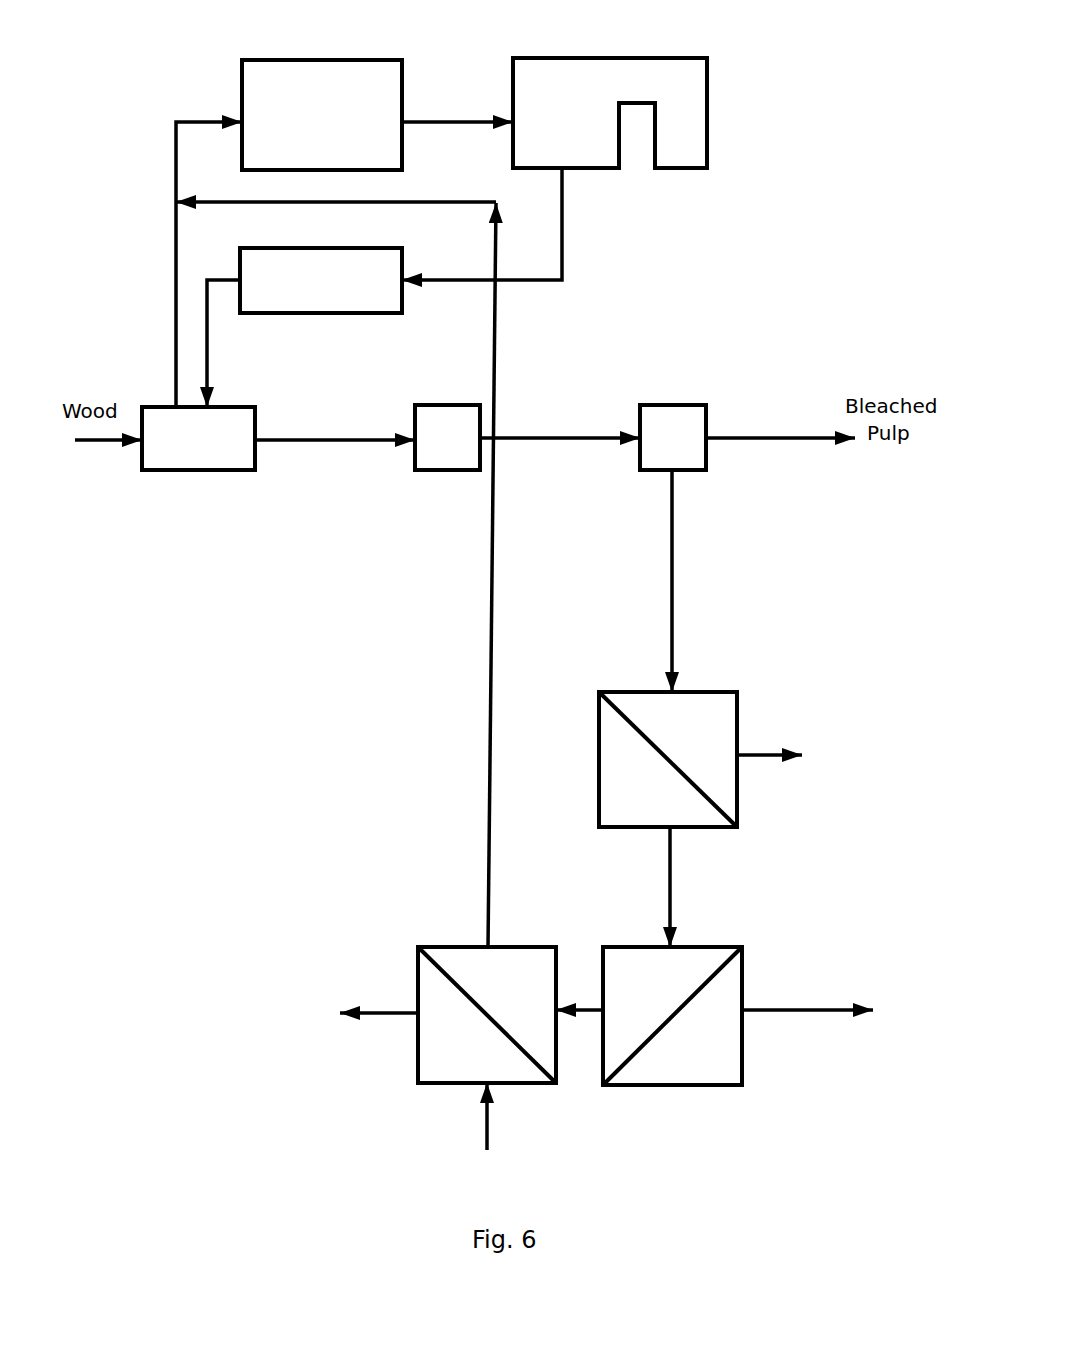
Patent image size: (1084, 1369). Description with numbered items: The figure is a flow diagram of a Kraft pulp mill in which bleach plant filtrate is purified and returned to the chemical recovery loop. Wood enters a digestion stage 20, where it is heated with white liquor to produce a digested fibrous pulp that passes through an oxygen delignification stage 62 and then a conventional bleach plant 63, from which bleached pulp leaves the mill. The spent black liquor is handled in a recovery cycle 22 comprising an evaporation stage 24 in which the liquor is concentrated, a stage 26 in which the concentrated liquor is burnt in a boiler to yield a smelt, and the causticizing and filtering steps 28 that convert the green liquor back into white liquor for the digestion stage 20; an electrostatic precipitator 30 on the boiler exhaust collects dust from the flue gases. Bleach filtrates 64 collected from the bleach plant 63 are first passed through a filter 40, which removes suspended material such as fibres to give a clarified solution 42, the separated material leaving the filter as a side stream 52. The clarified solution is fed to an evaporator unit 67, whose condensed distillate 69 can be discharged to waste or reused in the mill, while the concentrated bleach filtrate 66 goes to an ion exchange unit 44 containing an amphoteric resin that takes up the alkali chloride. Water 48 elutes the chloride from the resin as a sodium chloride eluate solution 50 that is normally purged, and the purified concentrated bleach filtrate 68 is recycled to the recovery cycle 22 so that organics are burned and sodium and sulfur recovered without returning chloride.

The digestion stage 20 is at (175, 460).
The recovery cycle 22 is at (176, 262).
The evaporation stage 24 is at (372, 80).
The boiler stage 26 is at (530, 168).
The causticizing and filtering steps 28 is at (372, 268).
The electrostatic precipitator 30 is at (688, 157).
The filter 40 is at (599, 718).
The clarified solution 42 is at (671, 860).
The ion exchange unit 44 is at (470, 978).
The water 48 is at (490, 1130).
The sodium chloride eluate solution 50 is at (362, 1011).
The permeate outlet 52 is at (753, 758).
The oxygen delignification stage 62 is at (425, 440).
The bleach plant 63 is at (685, 450).
The bleach filtrates 64 is at (673, 598).
The concentrated bleach filtrate 66 is at (574, 1012).
The evaporator unit 67 is at (737, 990).
The purified concentrated bleach filtrate 68 is at (490, 838).
The condensed distillate 69 is at (805, 1012).